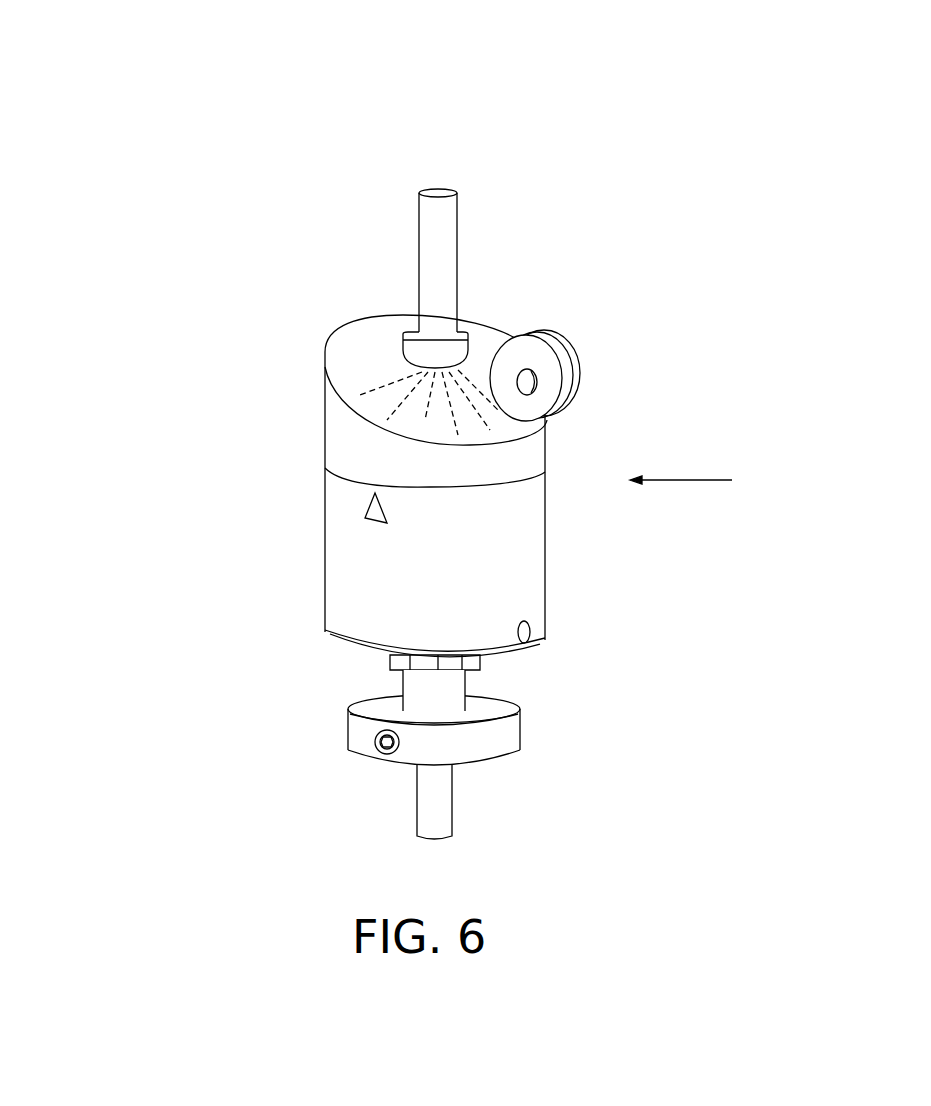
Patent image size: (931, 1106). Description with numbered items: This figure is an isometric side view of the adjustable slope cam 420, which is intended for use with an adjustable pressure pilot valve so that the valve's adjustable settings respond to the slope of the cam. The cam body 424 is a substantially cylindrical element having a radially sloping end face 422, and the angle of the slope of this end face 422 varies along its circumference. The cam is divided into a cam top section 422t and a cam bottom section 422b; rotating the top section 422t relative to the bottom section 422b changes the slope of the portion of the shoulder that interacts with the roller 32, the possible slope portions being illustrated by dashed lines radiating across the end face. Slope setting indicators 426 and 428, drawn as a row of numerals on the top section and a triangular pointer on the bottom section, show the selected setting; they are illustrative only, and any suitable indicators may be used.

The adjustable slope cam 420 is at (668, 102).
The radially sloping end face 422 is at (370, 330).
The cam top section 422t is at (333, 433).
The cam bottom section 422b is at (385, 595).
The slope setting indicator 426 is at (372, 460).
The slope setting indicator 428 is at (363, 517).
The cam body 424 is at (726, 490).
The roller 32 is at (562, 368).